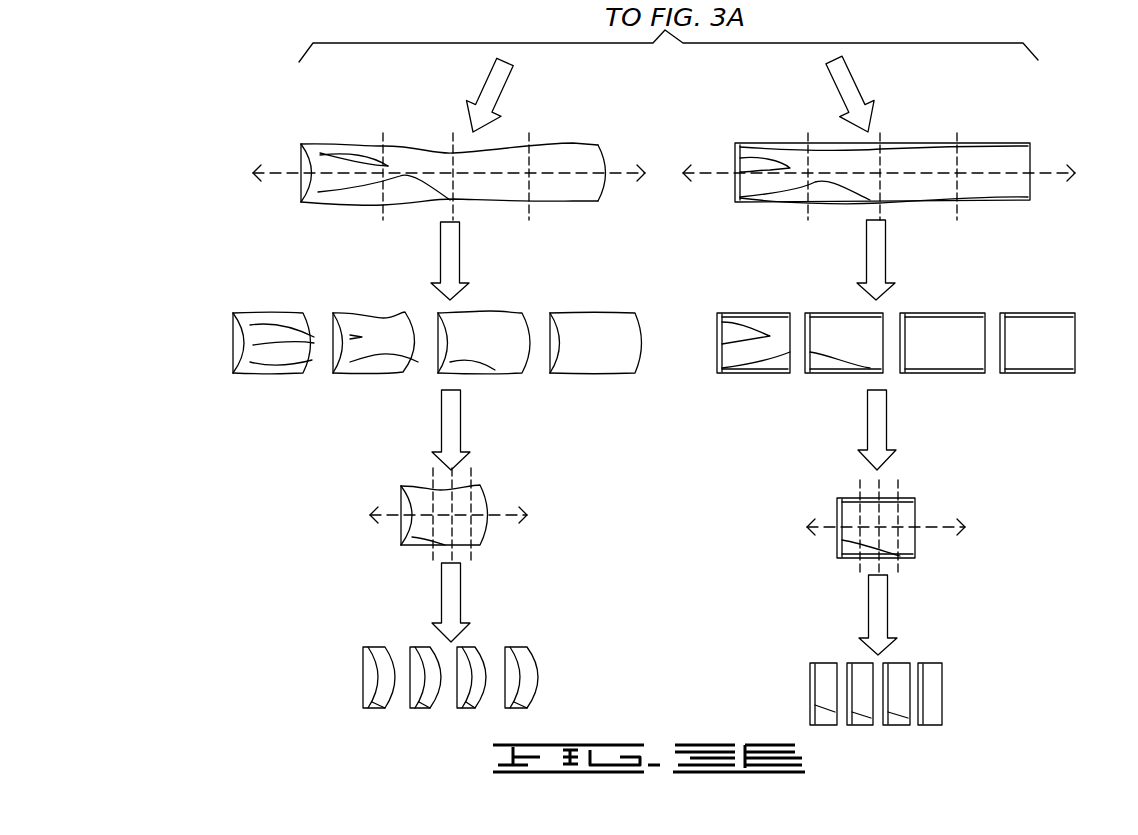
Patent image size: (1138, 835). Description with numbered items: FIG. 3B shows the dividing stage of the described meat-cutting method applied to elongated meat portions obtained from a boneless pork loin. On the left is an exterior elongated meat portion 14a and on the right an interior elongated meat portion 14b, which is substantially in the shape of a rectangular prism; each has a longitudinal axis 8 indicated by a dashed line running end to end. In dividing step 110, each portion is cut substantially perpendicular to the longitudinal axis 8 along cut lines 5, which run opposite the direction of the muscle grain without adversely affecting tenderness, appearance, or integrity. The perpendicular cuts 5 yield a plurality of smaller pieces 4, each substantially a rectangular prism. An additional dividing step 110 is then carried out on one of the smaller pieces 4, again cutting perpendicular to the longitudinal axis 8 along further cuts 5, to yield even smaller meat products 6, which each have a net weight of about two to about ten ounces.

The smaller pieces 4 is at (233, 348).
The cut substantially perpendicular to longitudinal axis 5 is at (452, 135).
The smaller meat products 6 is at (363, 670).
The longitudinal axis 8 is at (278, 172).
The exterior elongated meat portion 14a is at (573, 143).
The interior elongated meat portion 14b is at (1015, 190).
The dividing step 110 is at (325, 110).